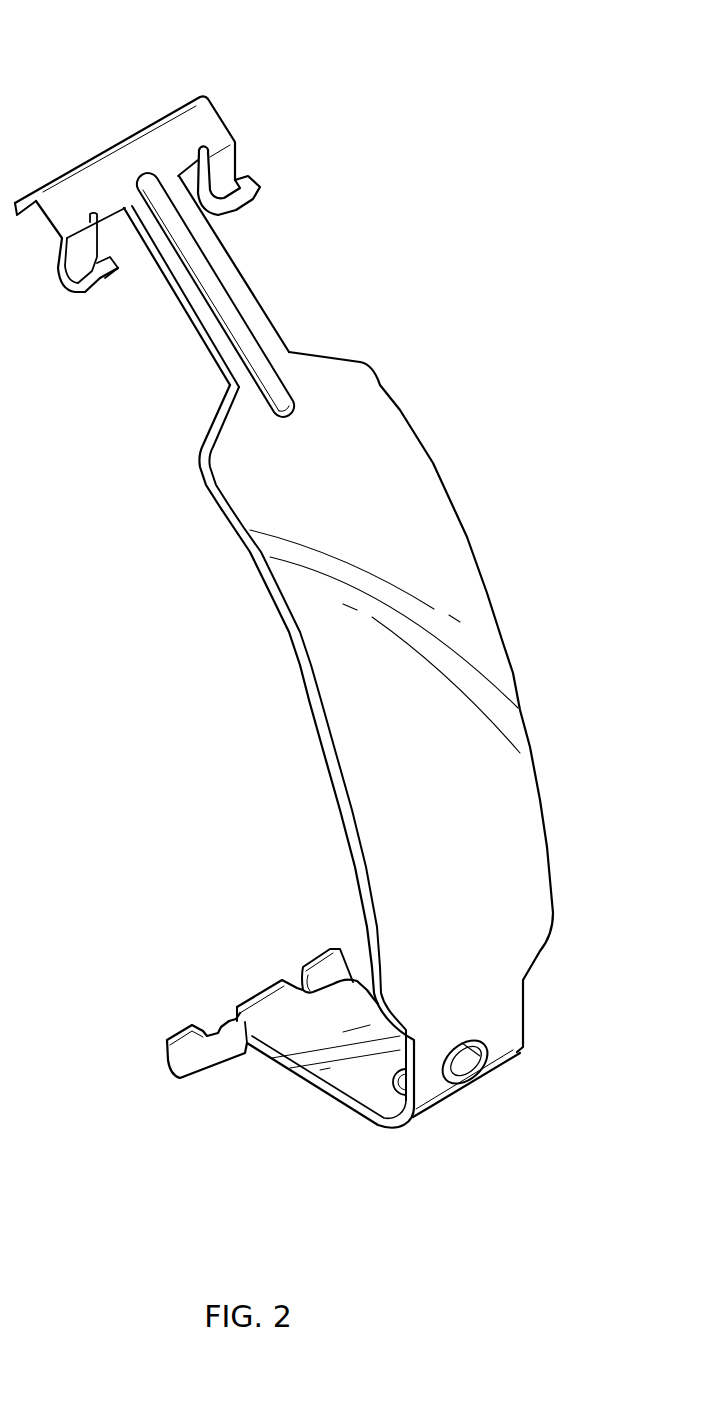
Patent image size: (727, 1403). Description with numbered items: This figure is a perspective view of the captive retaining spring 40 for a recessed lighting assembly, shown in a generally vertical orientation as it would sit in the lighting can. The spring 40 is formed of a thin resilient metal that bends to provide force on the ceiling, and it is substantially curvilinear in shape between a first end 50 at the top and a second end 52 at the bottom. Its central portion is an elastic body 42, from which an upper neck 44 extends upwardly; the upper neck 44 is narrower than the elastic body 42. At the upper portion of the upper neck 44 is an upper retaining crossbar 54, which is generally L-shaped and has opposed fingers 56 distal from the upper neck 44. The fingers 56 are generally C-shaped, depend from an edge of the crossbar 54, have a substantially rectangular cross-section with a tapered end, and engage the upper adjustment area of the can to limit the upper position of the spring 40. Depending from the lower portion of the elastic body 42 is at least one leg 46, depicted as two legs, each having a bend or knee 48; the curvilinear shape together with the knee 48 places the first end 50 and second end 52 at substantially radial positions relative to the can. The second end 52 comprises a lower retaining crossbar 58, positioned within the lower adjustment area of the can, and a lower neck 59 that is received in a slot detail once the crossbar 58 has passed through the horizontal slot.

The captive retaining spring 40 is at (473, 240).
The elastic body 42 is at (505, 643).
The upper neck 44 is at (249, 290).
The leg 46 is at (430, 1127).
The knee 48 is at (515, 1055).
The first end 50 is at (245, 97).
The second end 52 is at (231, 1125).
The upper retaining crossbar 54 is at (75, 188).
The fingers 56 is at (261, 182).
The lower retaining crossbar 58 is at (220, 1030).
The lower neck 59 is at (256, 990).